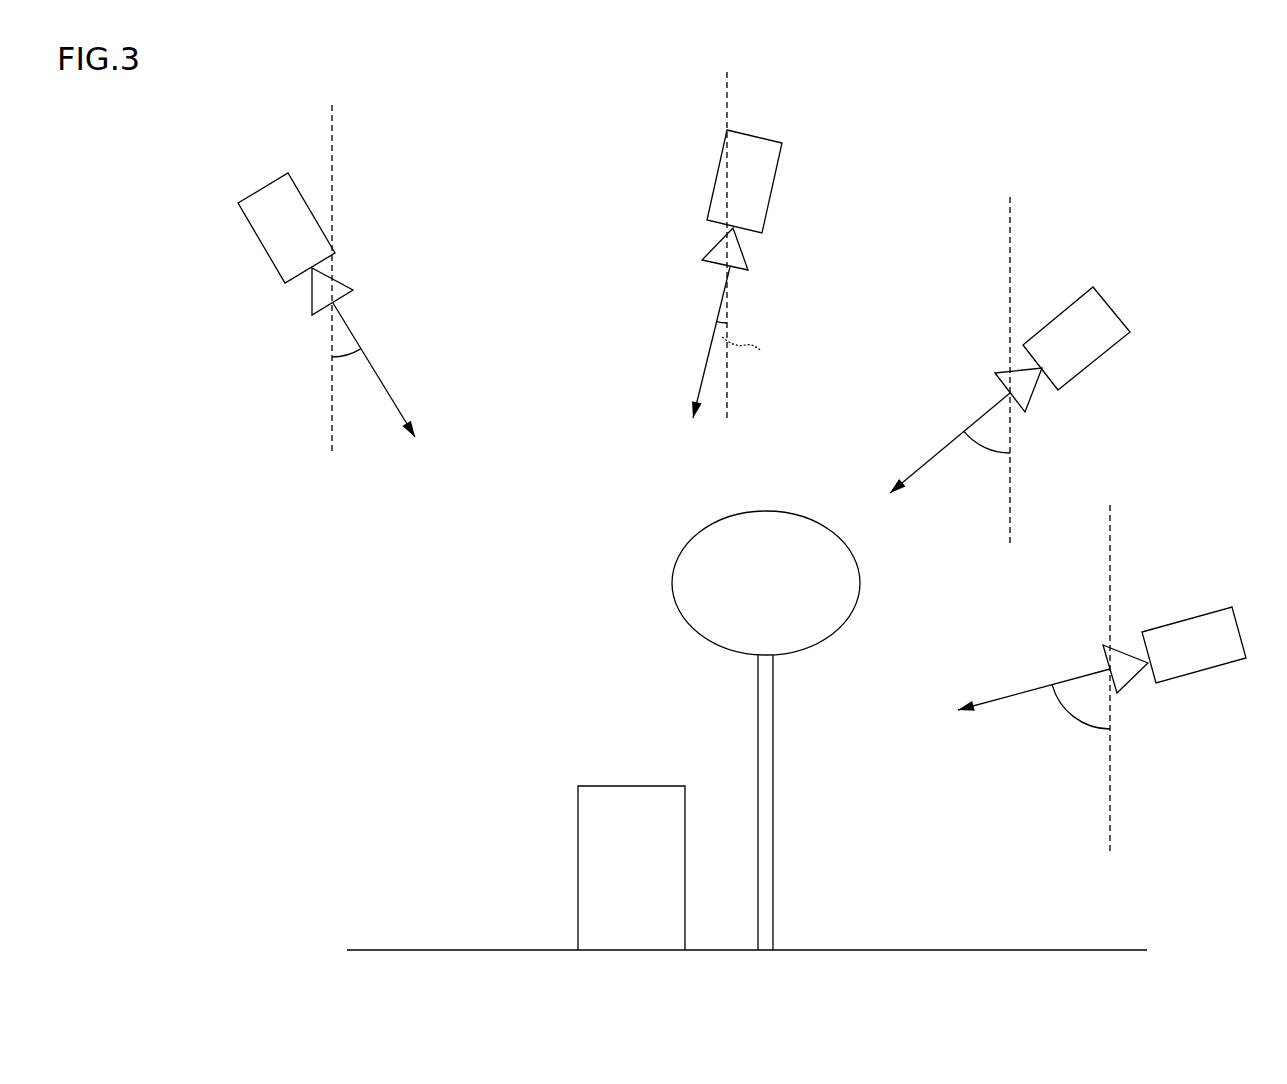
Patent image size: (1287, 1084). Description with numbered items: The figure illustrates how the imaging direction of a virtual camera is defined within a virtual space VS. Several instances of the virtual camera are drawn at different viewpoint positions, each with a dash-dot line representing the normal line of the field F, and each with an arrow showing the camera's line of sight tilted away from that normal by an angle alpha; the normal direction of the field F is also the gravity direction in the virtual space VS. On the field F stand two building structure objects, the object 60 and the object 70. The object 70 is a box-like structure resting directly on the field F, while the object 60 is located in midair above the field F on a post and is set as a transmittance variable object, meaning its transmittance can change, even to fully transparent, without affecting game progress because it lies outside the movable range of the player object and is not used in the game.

The transmittance variable object 60 is at (766, 511).
The object 70 is at (632, 786).
The field F is at (962, 949).
The virtual space VS is at (532, 128).